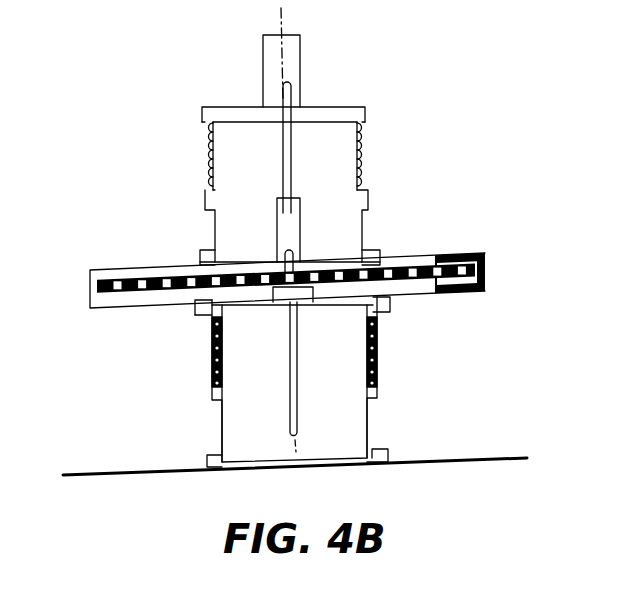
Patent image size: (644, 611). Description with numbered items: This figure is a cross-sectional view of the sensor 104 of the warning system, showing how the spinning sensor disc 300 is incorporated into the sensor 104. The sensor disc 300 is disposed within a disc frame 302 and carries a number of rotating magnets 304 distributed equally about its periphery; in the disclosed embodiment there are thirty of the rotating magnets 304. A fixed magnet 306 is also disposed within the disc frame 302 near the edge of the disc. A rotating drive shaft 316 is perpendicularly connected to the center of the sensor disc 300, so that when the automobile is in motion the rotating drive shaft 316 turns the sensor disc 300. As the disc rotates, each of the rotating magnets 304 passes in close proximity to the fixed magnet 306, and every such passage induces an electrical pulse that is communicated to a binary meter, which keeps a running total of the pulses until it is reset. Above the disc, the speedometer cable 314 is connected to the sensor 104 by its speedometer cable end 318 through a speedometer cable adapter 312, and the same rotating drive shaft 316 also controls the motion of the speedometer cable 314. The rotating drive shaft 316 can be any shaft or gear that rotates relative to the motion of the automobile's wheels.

The sensor 104 is at (140, 92).
The sensor disc 300 is at (117, 300).
The disc frame 302 is at (93, 270).
The rotating magnets 304 is at (166, 277).
The fixed magnet 306 is at (486, 268).
The speedometer cable adapter 312 is at (363, 227).
The speedometer cable 314 is at (301, 62).
The rotating drive shaft 316 is at (302, 373).
The speedometer cable end 318 is at (367, 150).